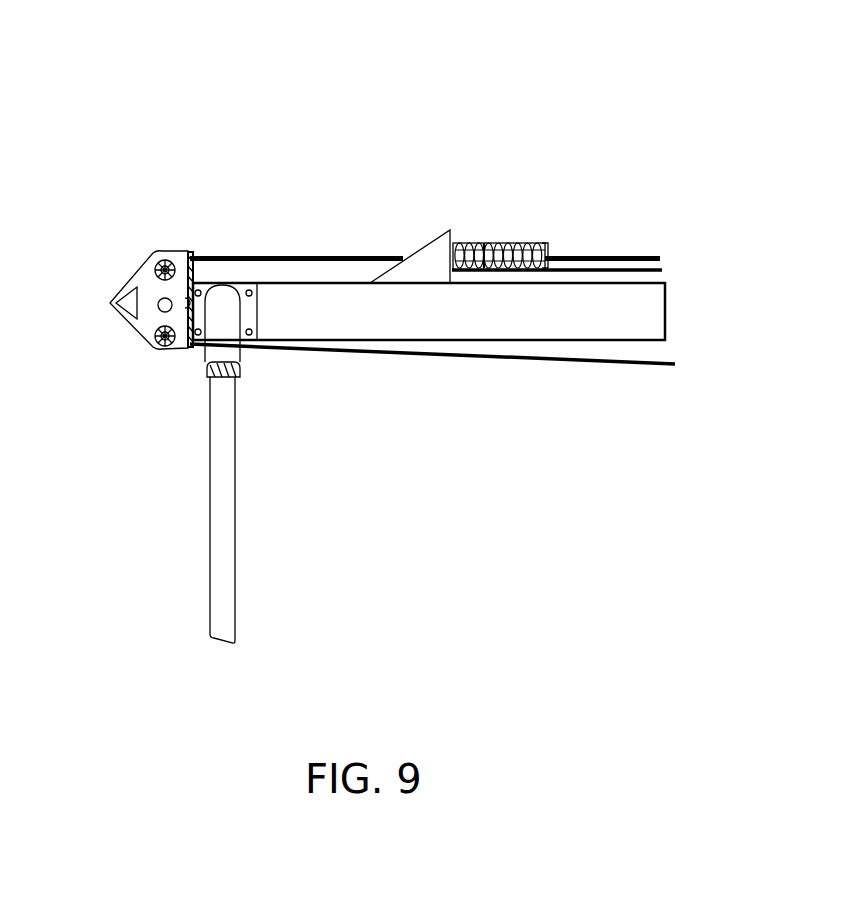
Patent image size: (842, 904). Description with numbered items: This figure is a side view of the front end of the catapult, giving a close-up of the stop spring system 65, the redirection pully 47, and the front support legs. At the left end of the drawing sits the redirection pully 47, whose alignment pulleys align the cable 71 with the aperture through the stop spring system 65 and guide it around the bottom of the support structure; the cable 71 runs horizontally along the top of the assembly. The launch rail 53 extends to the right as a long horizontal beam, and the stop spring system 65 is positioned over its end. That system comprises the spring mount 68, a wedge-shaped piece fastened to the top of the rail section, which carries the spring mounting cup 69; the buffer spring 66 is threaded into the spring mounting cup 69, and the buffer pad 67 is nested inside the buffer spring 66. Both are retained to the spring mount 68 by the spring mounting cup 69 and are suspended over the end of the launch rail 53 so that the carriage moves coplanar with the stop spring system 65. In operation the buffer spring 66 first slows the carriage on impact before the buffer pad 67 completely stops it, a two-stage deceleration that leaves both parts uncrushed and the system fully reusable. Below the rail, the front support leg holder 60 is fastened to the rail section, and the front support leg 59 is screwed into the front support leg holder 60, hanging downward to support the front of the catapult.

The redirection pully 47 is at (136, 274).
The launch rail 53 is at (607, 292).
The front support leg 59 is at (238, 451).
The front support leg holder 60 is at (243, 363).
The stop spring system 65 is at (444, 226).
The buffer spring 66 is at (520, 236).
The buffer pad 67 is at (487, 236).
The spring mount 68 is at (423, 236).
The spring mounting cup 69 is at (467, 233).
The cable 71 is at (613, 255).